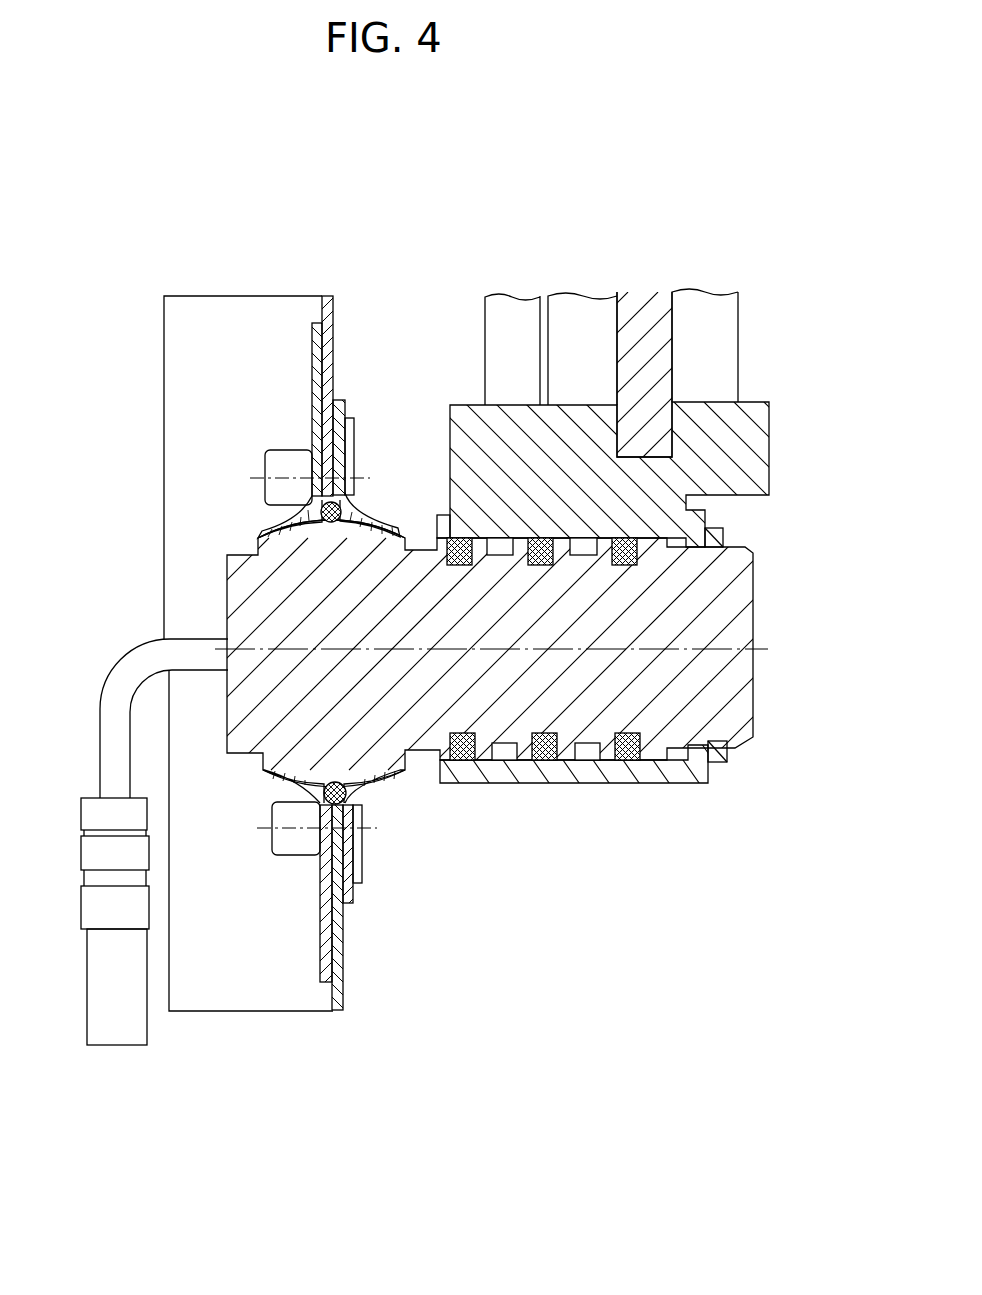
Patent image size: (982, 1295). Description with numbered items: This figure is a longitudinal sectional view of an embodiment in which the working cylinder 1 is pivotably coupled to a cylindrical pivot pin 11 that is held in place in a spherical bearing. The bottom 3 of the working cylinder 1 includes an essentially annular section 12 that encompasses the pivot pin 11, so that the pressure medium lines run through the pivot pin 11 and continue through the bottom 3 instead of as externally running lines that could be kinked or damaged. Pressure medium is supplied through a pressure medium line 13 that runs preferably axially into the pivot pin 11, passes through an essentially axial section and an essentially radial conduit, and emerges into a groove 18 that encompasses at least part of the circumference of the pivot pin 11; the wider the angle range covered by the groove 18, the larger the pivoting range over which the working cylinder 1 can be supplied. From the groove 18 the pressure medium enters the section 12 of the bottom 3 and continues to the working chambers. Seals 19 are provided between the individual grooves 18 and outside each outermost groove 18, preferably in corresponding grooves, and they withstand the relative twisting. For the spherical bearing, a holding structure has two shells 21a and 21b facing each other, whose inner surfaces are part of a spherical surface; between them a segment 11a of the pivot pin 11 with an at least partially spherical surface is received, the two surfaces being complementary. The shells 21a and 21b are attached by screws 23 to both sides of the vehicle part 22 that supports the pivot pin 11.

The working cylinder 1 is at (760, 290).
The bottom 3 is at (726, 458).
The pivot pin 11 is at (702, 676).
The segment of the pivot pin 11a is at (310, 550).
The section of the bottom 12 is at (493, 772).
The pressure medium line 13 is at (133, 675).
The groove 18 is at (590, 750).
The seal 19 is at (640, 758).
The shell 21a is at (355, 793).
The shell 21b is at (320, 902).
The vehicle part 22 is at (340, 985).
The screw 23 is at (357, 855).